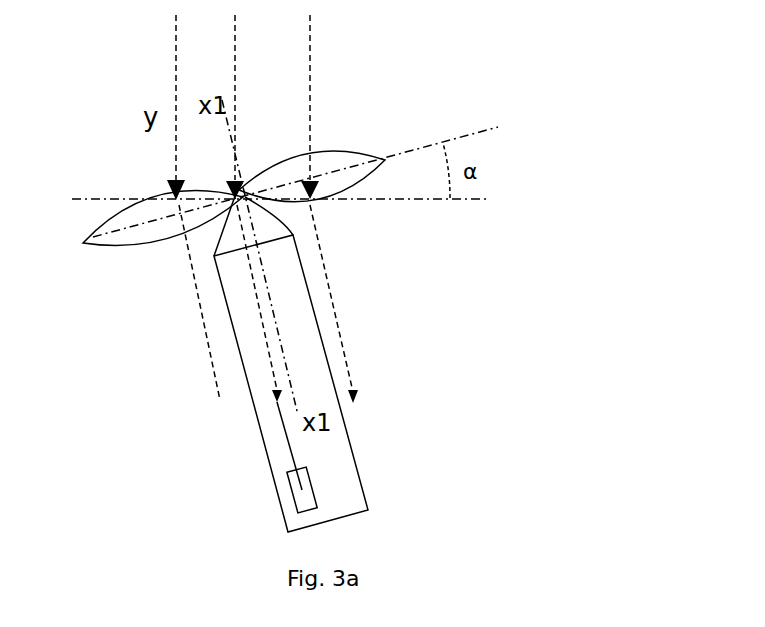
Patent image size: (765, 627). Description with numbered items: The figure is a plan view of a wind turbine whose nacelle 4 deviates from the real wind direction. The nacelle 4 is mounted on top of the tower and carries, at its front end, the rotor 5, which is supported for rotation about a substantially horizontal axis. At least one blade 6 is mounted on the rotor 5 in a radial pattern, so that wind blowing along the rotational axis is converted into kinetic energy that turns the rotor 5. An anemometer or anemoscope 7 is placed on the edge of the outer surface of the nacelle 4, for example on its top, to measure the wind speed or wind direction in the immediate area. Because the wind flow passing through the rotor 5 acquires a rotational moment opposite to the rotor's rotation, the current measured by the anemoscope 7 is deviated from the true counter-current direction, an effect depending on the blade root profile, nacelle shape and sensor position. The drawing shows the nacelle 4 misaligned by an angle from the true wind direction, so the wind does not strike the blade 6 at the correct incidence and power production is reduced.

The nacelle 4 is at (335, 432).
The rotor 5 is at (228, 240).
The blade 6 is at (138, 218).
The anemometer or anemoscope 7 is at (298, 503).